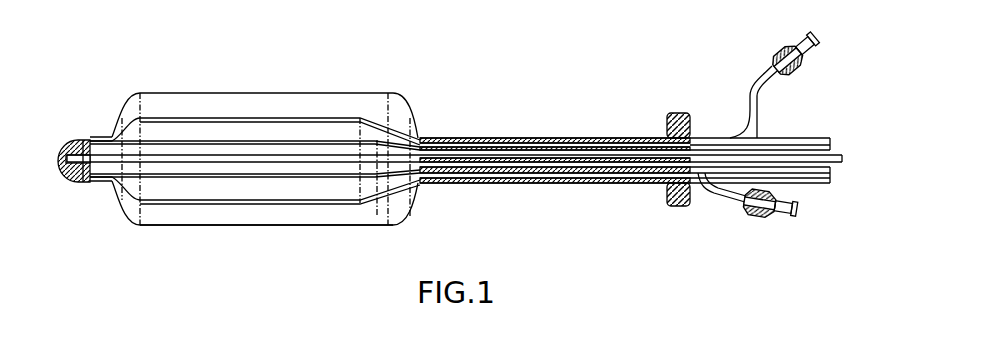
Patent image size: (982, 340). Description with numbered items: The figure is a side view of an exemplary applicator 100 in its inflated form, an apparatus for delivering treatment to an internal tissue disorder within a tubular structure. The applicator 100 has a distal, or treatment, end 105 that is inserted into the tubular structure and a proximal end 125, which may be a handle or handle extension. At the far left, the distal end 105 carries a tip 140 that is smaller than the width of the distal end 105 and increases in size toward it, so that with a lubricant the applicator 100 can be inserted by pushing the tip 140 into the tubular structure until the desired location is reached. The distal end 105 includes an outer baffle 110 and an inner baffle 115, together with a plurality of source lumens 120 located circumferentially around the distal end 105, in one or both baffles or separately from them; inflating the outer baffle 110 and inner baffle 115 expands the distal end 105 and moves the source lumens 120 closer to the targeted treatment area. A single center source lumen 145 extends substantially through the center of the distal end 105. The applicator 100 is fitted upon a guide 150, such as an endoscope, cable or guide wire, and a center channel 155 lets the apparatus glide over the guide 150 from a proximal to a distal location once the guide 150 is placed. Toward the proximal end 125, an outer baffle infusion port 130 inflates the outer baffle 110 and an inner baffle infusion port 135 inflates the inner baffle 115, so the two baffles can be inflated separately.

The applicator 100 is at (452, 91).
The distal end 105 is at (393, 94).
The outer baffle 110 is at (183, 212).
The inner baffle 115 is at (279, 212).
The source lumens 120 is at (347, 184).
The proximal end 125 is at (677, 205).
The outer baffle infusion port 130 is at (779, 37).
The inner baffle infusion port 135 is at (798, 208).
The tip 140 is at (84, 132).
The center source lumen 145 is at (323, 157).
The guide 150 is at (233, 156).
The center channel 155 is at (133, 153).